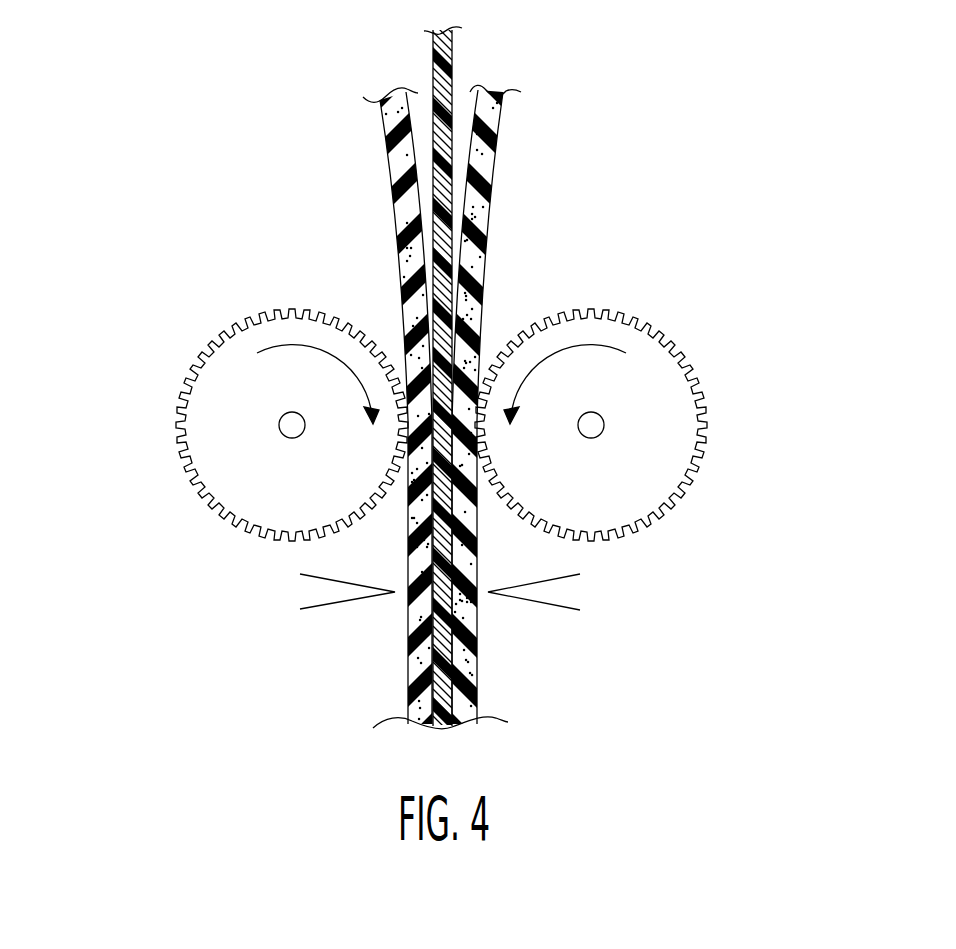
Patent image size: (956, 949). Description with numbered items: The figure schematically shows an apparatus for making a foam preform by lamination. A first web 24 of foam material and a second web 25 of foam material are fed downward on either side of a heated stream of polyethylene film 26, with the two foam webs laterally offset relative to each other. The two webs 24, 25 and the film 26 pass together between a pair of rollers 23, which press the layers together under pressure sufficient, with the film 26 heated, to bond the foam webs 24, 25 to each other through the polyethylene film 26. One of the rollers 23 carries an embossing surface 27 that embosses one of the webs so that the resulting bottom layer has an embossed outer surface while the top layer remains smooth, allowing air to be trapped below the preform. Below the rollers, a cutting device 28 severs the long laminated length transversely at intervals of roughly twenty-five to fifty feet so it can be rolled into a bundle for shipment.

The rollers 23 is at (441, 421).
The first web of foam material 24 is at (402, 155).
The second web of foam material 25 is at (500, 108).
The heated web of polyethylene film 26 is at (435, 63).
The embossing surface 27 is at (663, 517).
The cutting device 28 is at (323, 593).